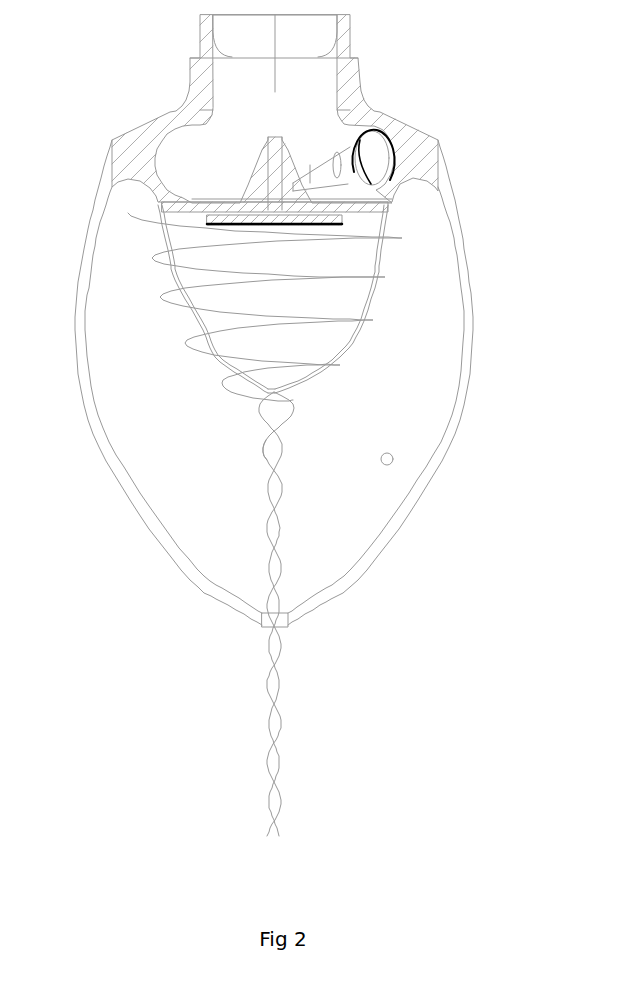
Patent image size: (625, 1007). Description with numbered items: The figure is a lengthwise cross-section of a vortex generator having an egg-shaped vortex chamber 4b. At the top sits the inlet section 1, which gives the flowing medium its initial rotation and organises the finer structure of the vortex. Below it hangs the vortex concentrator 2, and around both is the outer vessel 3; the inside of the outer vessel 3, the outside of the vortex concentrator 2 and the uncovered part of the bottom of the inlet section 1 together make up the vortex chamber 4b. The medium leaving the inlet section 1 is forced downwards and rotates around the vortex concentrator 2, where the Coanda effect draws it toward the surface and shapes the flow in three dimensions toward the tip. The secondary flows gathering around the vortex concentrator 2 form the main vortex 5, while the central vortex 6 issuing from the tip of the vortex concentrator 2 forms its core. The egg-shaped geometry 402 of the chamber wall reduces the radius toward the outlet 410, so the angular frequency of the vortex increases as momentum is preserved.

The inlet section 1 is at (441, 133).
The vortex concentrator 2 is at (210, 361).
The outer vessel 3 is at (324, 452).
The egg-shaped vortex chamber 4b is at (393, 459).
The egg-shaped geometry 402 is at (396, 534).
The outlet 410 is at (290, 631).
The main vortex 5 is at (263, 600).
The central vortex 6 is at (278, 445).